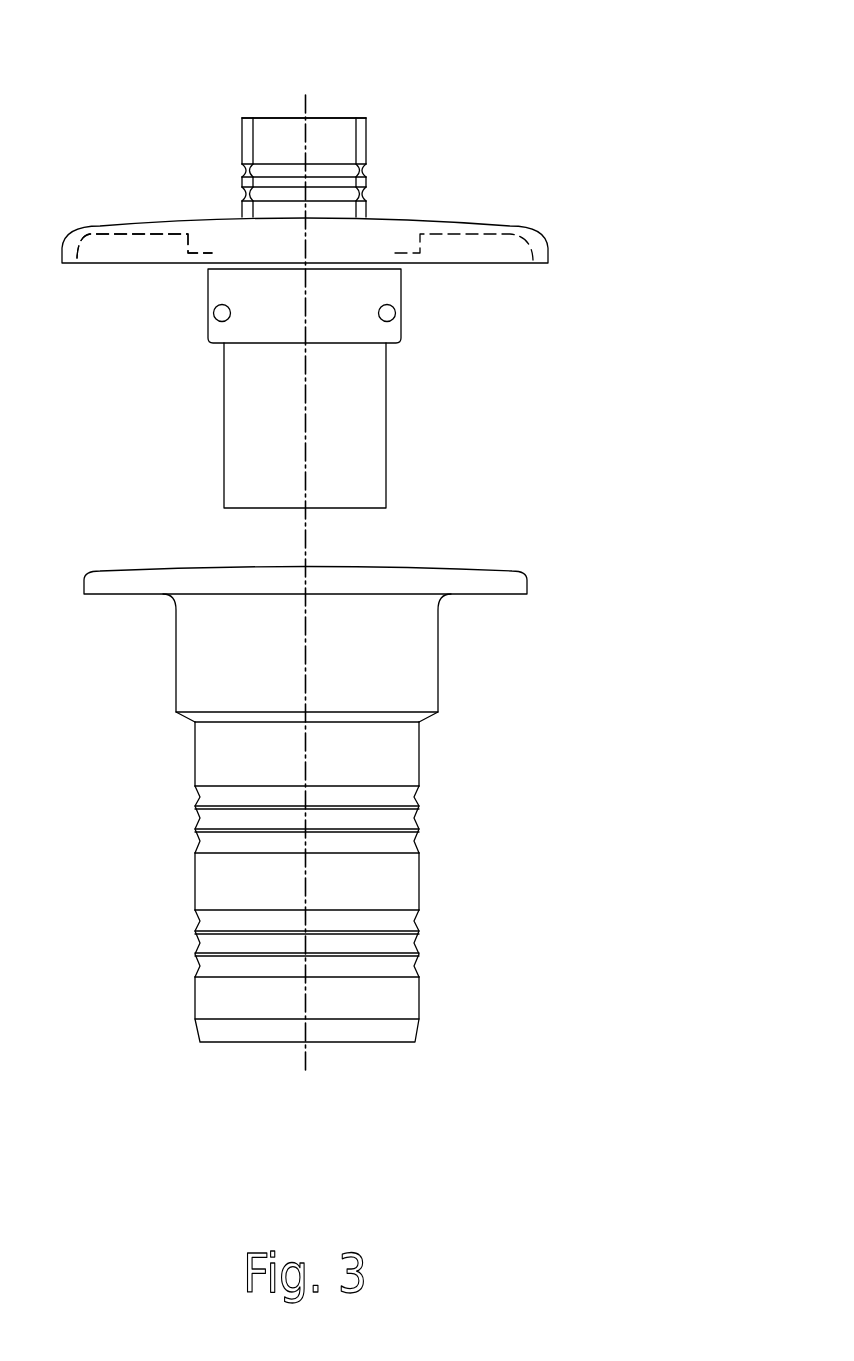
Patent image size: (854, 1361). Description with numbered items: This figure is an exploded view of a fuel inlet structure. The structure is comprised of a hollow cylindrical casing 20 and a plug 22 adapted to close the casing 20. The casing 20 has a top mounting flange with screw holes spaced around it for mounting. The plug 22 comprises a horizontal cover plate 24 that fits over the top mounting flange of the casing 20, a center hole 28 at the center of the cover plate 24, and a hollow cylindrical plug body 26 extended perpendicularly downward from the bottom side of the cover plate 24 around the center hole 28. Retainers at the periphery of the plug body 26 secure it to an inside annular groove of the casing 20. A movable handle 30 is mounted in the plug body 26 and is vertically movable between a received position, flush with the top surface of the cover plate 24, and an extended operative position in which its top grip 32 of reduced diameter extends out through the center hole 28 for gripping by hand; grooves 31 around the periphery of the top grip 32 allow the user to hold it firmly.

The hollow cylindrical casing 20 is at (395, 767).
The plug 22 is at (408, 219).
The horizontal cover plate 24 is at (395, 238).
The hollow cylindrical plug body 26 is at (363, 428).
The center hole 28 is at (282, 217).
The movable handle 30 is at (265, 148).
The grooves 31 is at (248, 193).
The top grip 32 is at (330, 118).